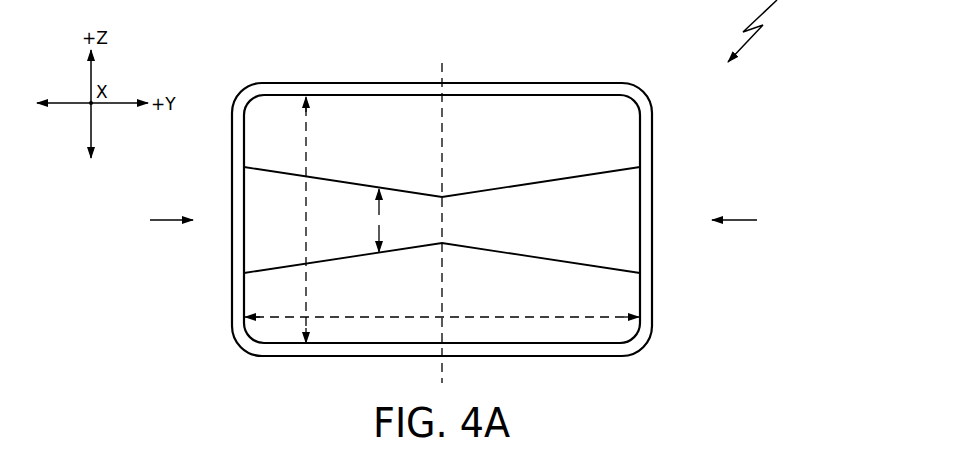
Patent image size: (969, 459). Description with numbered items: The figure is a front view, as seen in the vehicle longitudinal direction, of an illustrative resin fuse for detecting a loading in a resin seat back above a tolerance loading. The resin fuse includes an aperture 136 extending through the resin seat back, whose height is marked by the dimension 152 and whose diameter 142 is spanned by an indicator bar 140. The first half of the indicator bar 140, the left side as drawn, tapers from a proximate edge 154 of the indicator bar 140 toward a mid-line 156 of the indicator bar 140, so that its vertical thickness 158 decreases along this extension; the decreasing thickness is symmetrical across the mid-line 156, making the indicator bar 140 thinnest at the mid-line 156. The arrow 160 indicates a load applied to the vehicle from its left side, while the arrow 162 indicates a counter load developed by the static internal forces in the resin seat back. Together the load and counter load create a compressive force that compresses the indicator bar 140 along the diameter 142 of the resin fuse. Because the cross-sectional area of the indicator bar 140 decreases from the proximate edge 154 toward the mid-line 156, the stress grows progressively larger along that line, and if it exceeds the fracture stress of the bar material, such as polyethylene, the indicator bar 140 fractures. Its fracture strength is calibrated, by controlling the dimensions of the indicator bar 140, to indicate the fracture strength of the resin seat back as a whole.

The aperture 136 is at (598, 118).
The indicator bar 140 is at (632, 200).
The diameter 142 is at (472, 317).
The height dimension 152 is at (307, 150).
The proximate edge 154 is at (246, 197).
The mid-line 156 is at (443, 135).
The vertical thickness 158 is at (379, 218).
The arrow 160 is at (742, 220).
The arrow 162 is at (163, 221).